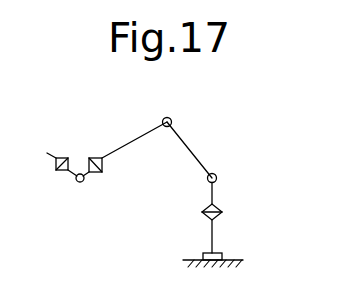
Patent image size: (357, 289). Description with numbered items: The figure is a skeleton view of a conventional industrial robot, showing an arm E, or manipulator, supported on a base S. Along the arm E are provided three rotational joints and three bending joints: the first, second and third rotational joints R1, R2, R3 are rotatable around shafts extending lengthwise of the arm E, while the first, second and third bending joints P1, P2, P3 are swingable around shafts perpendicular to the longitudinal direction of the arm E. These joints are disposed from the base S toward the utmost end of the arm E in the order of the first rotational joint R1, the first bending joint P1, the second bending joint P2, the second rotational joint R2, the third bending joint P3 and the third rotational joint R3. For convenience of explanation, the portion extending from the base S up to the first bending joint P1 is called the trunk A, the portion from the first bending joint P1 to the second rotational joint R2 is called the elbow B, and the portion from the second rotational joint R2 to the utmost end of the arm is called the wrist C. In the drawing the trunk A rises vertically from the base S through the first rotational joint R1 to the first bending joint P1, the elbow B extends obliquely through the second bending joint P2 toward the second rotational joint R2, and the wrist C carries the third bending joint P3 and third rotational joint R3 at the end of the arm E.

The first bending joint P1 is at (217, 177).
The second bending joint P2 is at (172, 115).
The third bending joint P3 is at (75, 204).
The first rotational joint R1 is at (220, 212).
The second rotational joint R2 is at (97, 174).
The third rotational joint R3 is at (63, 160).
The trunk A is at (232, 195).
The elbow B is at (171, 136).
The arm E is at (197, 142).
The wrist C is at (87, 172).
The base S is at (222, 257).